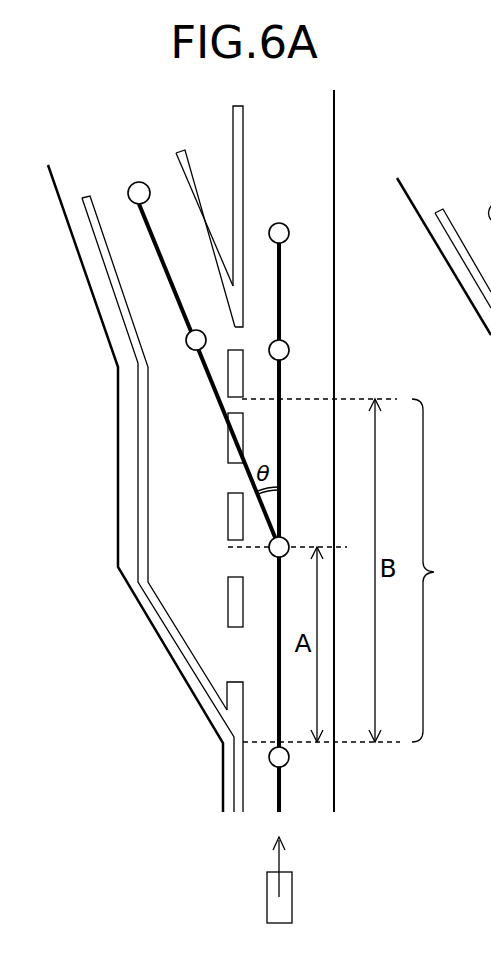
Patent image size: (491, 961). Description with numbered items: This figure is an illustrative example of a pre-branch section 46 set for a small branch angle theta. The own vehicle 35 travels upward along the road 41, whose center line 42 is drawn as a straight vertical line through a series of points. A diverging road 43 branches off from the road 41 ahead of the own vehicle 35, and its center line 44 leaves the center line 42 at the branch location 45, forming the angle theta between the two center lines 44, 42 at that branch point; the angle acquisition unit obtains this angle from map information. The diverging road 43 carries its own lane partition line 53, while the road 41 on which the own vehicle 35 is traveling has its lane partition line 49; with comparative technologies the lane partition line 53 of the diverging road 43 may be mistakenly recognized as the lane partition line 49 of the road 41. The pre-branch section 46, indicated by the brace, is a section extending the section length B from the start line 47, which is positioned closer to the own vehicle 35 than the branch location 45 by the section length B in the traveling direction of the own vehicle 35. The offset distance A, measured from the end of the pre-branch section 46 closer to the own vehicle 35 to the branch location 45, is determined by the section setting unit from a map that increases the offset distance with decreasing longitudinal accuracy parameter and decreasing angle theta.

The own vehicle 35 is at (292, 890).
The road 41 is at (312, 315).
The center line 42 is at (282, 290).
The diverging road 43 is at (170, 203).
The center line 44 is at (157, 240).
The branch location 45 is at (290, 537).
The pre-branch section 46 is at (439, 570).
The start line 47 is at (288, 750).
The lane partition line 49 is at (237, 778).
The lane partition line 53 is at (167, 640).